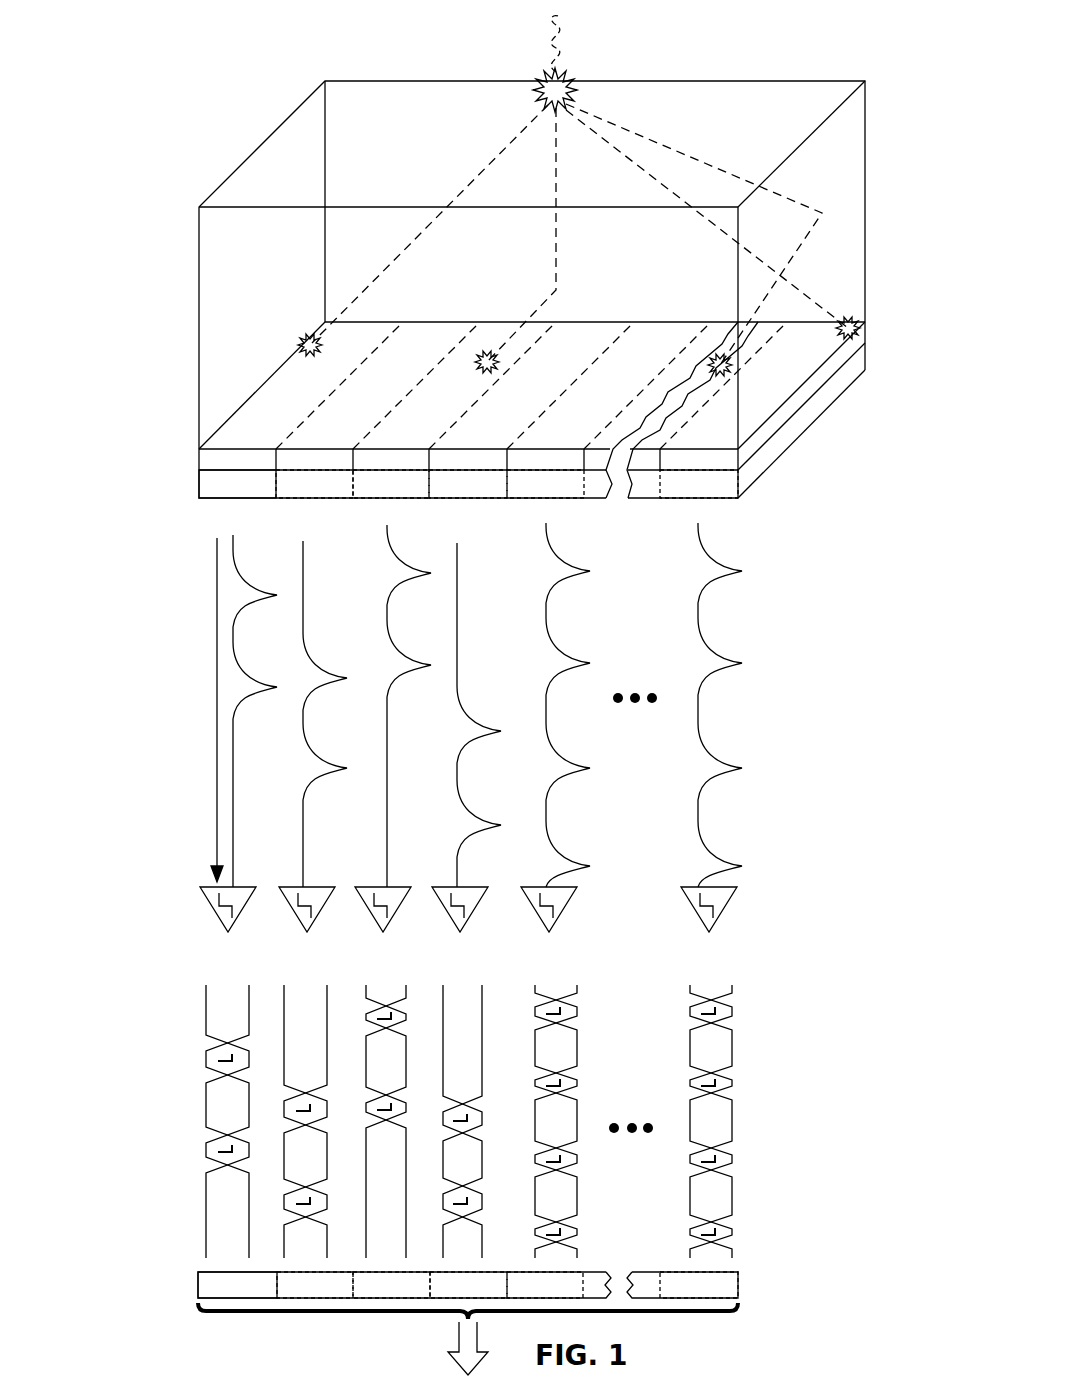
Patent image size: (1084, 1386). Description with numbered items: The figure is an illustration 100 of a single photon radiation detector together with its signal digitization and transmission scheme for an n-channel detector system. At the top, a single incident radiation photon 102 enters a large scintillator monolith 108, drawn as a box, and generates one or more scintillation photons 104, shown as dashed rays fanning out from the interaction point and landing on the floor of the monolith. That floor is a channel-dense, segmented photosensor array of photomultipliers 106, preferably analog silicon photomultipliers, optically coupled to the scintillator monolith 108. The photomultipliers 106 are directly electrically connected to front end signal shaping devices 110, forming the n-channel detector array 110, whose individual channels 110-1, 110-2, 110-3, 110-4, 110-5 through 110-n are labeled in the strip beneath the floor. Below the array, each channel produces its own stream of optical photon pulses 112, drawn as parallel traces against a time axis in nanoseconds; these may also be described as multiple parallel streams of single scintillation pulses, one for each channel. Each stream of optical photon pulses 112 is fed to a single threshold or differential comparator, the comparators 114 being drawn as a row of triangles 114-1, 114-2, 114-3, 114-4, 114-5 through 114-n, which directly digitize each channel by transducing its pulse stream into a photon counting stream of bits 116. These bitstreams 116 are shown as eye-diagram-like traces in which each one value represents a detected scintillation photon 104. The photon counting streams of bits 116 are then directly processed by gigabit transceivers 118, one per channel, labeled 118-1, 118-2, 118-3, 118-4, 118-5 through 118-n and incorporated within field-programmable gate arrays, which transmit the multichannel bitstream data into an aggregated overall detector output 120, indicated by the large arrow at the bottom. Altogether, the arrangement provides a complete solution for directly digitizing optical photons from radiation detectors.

The illustration of a single photon radiation detector 100 is at (160, 42).
The incident radiation photon 102 is at (546, 74).
The scintillation photons 104 is at (530, 121).
The photomultipliers 106 is at (830, 366).
The scintillator monolith 108 is at (860, 152).
The front end signal shaping devices / n-channel detector array 110 is at (194, 476).
The channel 110-1 is at (237, 473).
The channel 110-2 is at (314, 473).
The channel 110-3 is at (391, 473).
The channel 110-4 is at (468, 473).
The channel 110-5 is at (545, 473).
The channel 110-n is at (699, 473).
The stream of optical photon pulses 112 is at (161, 533).
The comparators 114 is at (116, 883).
The comparator 114-1 is at (222, 922).
The comparator 114-2 is at (296, 912).
The comparator 114-3 is at (372, 912).
The comparator 114-4 is at (448, 906).
The comparator 114-5 is at (536, 912).
The comparator 114-n is at (695, 912).
The photon counting stream of bits 116 is at (161, 1000).
The gigabit transceivers 118 is at (186, 1287).
The gigabit transceiver channel 118-1 is at (237, 1285).
The gigabit transceiver channel 118-2 is at (315, 1285).
The gigabit transceiver channel 118-3 is at (391, 1285).
The gigabit transceiver channel 118-4 is at (468, 1285).
The gigabit transceiver channel 118-5 is at (545, 1285).
The gigabit transceiver channel 118-n is at (699, 1285).
The aggregated overall detector output 120 is at (459, 1338).